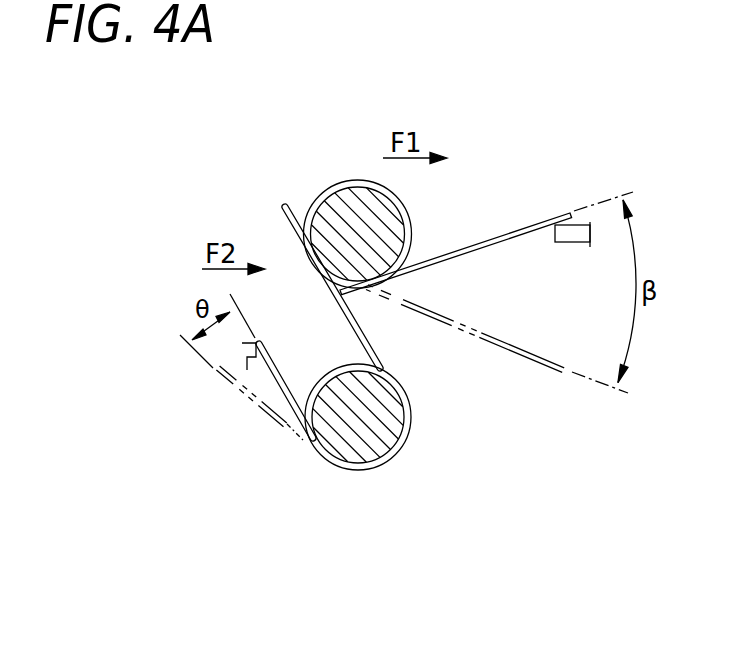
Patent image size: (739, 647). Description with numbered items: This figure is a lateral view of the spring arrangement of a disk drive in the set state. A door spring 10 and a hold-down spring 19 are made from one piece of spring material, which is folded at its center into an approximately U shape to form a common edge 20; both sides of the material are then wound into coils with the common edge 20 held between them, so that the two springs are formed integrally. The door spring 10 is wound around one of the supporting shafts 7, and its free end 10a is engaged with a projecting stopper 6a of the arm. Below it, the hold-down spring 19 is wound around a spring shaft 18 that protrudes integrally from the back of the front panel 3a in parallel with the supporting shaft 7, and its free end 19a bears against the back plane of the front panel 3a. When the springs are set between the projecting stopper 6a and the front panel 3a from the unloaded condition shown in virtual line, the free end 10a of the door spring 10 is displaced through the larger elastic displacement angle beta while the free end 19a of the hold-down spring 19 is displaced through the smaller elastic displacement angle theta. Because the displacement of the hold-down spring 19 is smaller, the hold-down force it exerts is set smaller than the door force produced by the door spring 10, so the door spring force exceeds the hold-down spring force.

The door spring 10 is at (345, 182).
The supporting shaft 7 is at (375, 236).
The common edge 20 is at (282, 208).
The free end 10a is at (528, 223).
The projecting stopper 6a is at (572, 244).
The free end 19a is at (280, 363).
The front panel 3a is at (243, 355).
The hold-down spring 19 is at (392, 453).
The spring shaft 18 is at (352, 437).